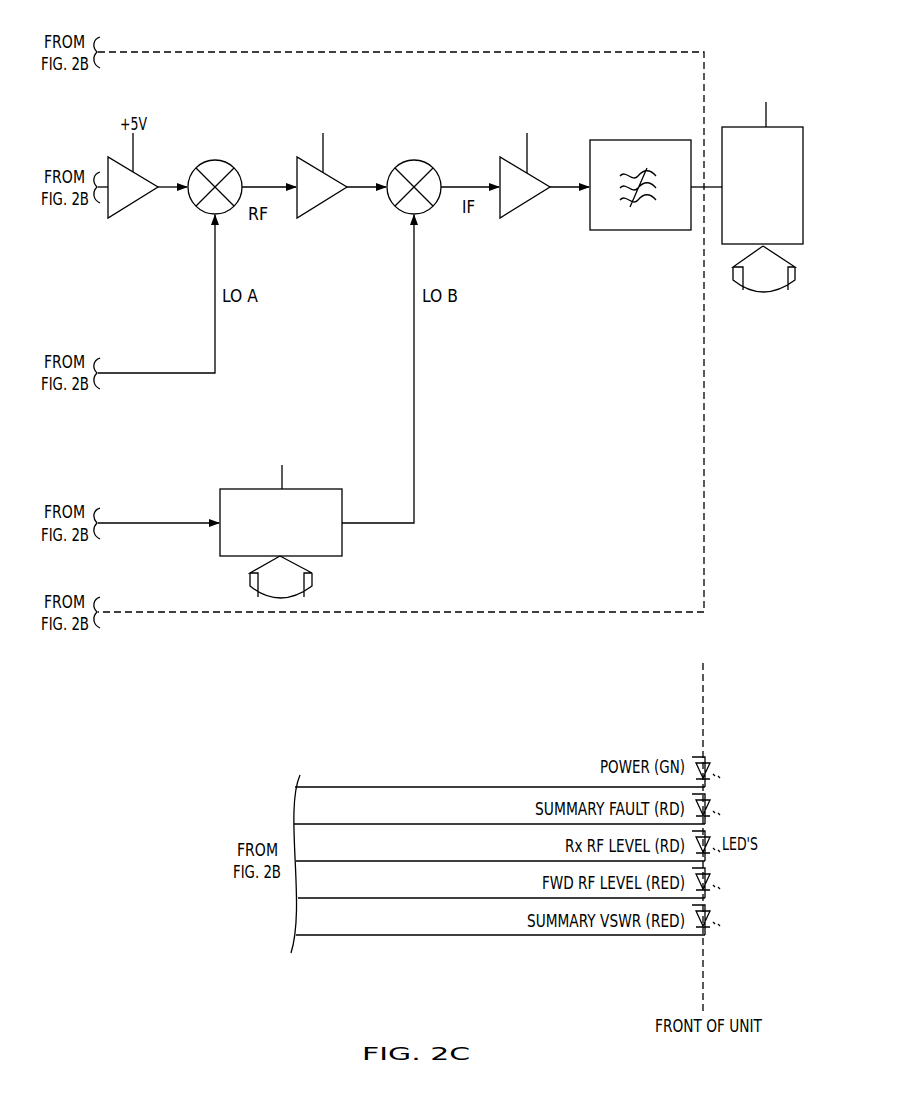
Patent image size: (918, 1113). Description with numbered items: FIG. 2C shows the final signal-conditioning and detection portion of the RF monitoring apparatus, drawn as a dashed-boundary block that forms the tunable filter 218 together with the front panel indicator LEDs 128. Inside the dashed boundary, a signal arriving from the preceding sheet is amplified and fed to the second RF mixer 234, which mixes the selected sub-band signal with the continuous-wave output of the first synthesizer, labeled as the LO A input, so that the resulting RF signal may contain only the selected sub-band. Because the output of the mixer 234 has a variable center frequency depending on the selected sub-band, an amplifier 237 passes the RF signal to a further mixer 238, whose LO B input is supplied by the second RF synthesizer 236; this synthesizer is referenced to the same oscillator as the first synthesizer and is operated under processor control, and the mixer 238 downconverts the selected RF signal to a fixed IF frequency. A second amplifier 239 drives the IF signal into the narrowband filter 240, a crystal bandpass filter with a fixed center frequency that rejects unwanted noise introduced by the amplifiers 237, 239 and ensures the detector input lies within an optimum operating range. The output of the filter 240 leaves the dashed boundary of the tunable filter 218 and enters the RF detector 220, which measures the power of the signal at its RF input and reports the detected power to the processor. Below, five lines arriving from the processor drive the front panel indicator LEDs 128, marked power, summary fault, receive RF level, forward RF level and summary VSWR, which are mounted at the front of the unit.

The front panel indicator LEDs 128 is at (736, 805).
The tunable filter 218 is at (739, 69).
The RF detector 220 is at (789, 127).
The second RF mixer 234 is at (218, 160).
The second RF synthesizer 236 is at (243, 489).
The amplifier 237 is at (333, 171).
The mixer 238 is at (417, 160).
The amplifier 239 is at (536, 171).
The narrowband filter 240 is at (573, 234).